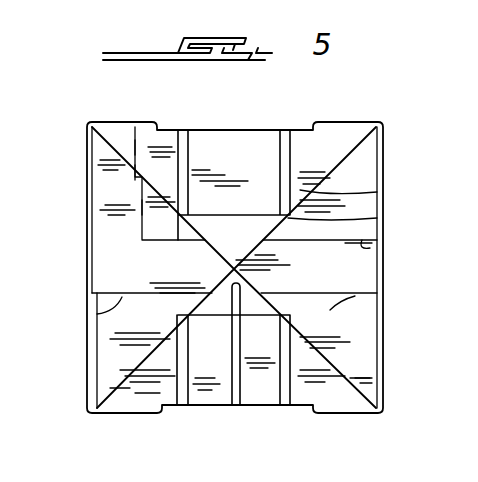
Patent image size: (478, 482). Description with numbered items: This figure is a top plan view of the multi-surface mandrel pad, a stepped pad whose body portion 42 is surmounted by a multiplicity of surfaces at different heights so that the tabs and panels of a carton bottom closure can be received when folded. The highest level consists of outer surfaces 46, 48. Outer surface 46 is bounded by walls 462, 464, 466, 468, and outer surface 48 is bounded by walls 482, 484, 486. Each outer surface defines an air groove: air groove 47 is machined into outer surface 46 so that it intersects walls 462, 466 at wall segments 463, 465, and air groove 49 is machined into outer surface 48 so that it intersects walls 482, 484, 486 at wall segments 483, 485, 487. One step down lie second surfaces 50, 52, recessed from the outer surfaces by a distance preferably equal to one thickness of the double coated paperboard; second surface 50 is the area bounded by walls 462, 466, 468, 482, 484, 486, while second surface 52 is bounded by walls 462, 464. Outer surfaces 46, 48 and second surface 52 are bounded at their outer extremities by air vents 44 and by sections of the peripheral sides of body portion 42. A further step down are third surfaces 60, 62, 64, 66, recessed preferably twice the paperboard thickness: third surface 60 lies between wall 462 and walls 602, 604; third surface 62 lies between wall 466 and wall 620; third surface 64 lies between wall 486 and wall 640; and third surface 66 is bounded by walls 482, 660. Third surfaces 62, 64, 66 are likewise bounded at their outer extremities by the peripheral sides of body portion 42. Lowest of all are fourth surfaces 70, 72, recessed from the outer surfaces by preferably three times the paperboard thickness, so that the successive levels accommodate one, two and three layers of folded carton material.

The body portion 42 is at (386, 156).
The air vents 44 is at (265, 137).
The outer surface 46 is at (327, 143).
The air groove 47 is at (183, 140).
The outer surface 48 is at (148, 407).
The air groove 49 is at (213, 320).
The second surface 50 is at (270, 255).
The second surface 52 is at (112, 135).
The third surface 60 is at (152, 200).
The third surface 62 is at (366, 150).
The third surface 64 is at (366, 388).
The third surface 66 is at (103, 382).
The fourth surface 70 is at (108, 272).
The fourth surface 72 is at (360, 282).
The wall 462 is at (135, 172).
The wall segment 463 is at (176, 220).
The wall 464 is at (133, 146).
The wall segment 465 is at (288, 218).
The wall 466 is at (296, 190).
The wall 468 is at (232, 235).
The wall 482 is at (140, 360).
The wall segment 483 is at (183, 318).
The wall 484 is at (247, 300).
The wall segment 485 is at (245, 289).
The wall 486 is at (357, 378).
The wall segment 487 is at (340, 322).
The wall 602 is at (140, 208).
The wall 604 is at (160, 238).
The wall 620 is at (374, 243).
The wall 640 is at (357, 296).
The wall 660 is at (97, 314).